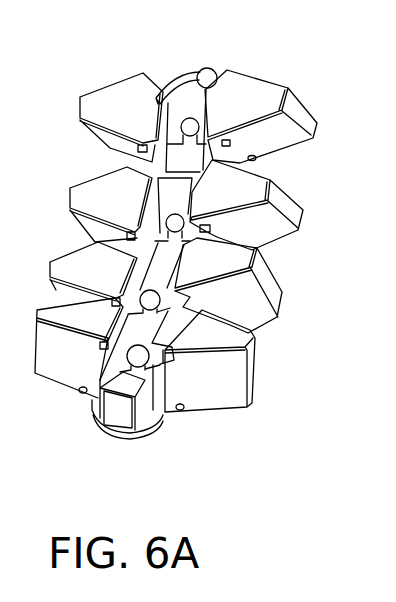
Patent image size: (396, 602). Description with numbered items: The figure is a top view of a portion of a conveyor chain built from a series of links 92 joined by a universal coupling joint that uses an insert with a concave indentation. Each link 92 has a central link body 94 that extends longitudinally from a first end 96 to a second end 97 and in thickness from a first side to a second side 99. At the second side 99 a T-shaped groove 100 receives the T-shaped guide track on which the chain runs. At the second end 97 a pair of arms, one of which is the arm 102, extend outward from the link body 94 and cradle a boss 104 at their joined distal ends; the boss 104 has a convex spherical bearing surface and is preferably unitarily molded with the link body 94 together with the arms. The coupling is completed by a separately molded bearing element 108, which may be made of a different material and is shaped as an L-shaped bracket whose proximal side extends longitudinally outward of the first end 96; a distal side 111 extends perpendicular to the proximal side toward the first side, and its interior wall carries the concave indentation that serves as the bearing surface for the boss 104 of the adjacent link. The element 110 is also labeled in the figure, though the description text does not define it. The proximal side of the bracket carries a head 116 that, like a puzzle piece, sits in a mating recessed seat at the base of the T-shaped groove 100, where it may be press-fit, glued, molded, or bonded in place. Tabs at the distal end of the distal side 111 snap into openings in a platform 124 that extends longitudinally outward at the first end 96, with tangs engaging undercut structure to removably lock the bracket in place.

The link 92 is at (312, 119).
The central link body 94 is at (243, 184).
The first end 96 is at (190, 407).
The second end 97 is at (240, 72).
The second side 99 is at (52, 305).
The T-shaped groove 100 is at (97, 363).
The arm 102 is at (187, 80).
The boss 104 is at (209, 69).
The bearing element 108 is at (152, 164).
The base 110 is at (160, 407).
The distal side 111 is at (117, 413).
The head 116 is at (258, 249).
The platform 124 is at (92, 417).